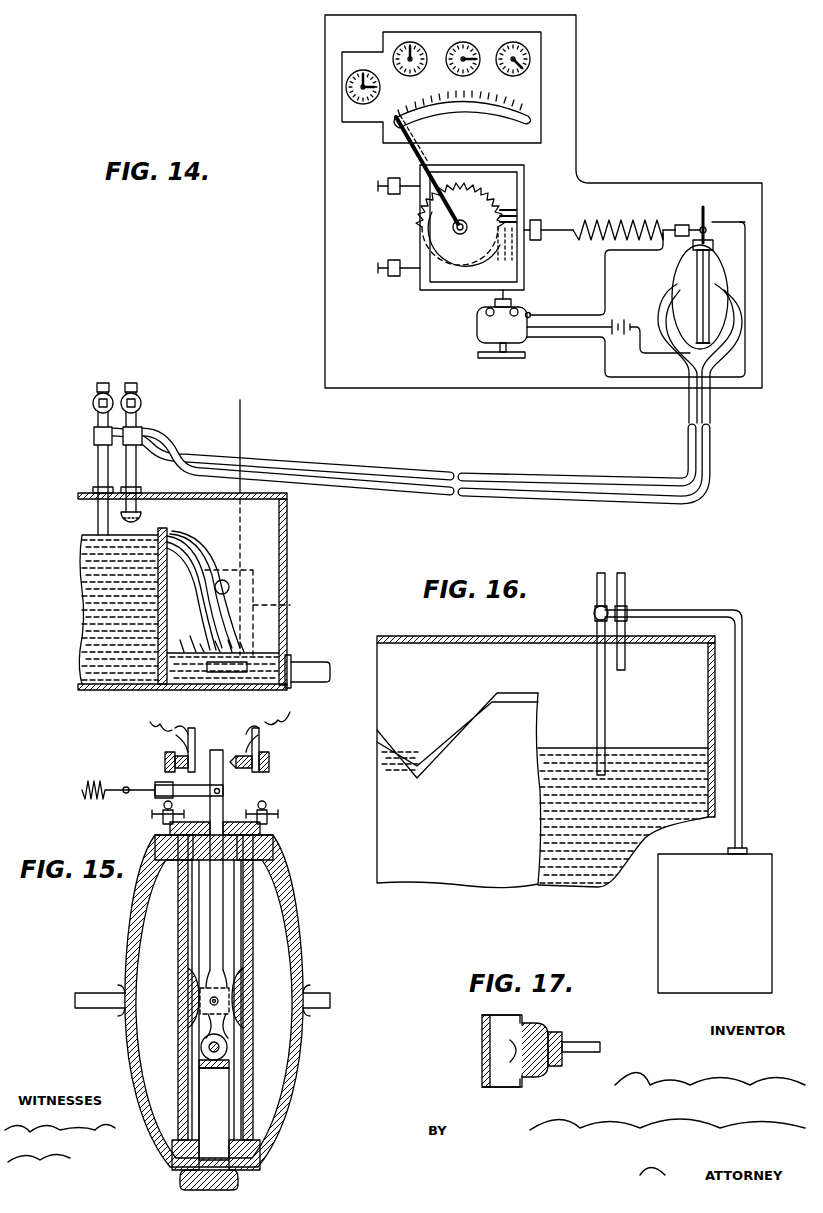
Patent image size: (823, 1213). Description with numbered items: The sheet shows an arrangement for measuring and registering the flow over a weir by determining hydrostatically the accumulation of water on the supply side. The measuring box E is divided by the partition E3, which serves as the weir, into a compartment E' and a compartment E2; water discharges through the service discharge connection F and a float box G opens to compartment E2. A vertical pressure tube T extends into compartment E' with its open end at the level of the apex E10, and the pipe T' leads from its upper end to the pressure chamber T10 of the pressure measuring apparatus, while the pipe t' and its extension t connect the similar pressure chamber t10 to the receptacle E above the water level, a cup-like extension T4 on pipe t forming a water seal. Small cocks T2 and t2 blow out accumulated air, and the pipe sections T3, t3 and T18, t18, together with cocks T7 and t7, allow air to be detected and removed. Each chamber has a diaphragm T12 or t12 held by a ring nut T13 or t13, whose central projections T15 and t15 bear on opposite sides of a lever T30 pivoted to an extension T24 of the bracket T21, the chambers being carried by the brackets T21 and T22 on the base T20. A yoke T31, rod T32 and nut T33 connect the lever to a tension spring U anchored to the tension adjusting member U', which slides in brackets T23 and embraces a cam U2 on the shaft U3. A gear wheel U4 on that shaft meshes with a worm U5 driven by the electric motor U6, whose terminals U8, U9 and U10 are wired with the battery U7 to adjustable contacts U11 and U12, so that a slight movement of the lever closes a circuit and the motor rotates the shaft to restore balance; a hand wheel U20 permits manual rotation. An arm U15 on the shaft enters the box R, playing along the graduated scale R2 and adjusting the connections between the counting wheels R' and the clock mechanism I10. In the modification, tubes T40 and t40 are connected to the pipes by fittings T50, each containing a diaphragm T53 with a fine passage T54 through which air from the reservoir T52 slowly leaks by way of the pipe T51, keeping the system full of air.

In FIG. 14, the clock mechanism I10 is at (342, 108).
In FIG. 14, the box of registering mechanism R is at (472, 73).
In FIG. 14, the counting wheels R' is at (462, 103).
In FIG. 14, the graduated scale R2 is at (480, 98).
In FIG. 14, the arm U15 is at (414, 150).
In FIG. 14, the tension adjusting member U' is at (511, 216).
In FIG. 14, the cam U2 is at (462, 262).
In FIG. 14, the shaft U3 is at (444, 237).
In FIG. 14, the gear wheel U4 is at (490, 205).
In FIG. 14, the worm U5 is at (515, 216).
In FIG. 14, the electric motor U6 is at (488, 332).
In FIG. 14, the battery U7 is at (622, 318).
In FIG. 14, the motor terminal U8 is at (600, 314).
In FIG. 14, the motor terminal U9 is at (530, 313).
In FIG. 14, the motor terminal U10 is at (535, 337).
In FIG. 14, the adjustable contact U11 is at (700, 220).
In FIG. 15, the adjustable contact U11 is at (192, 760).
In FIG. 14, the adjustable contact U12 is at (714, 220).
In FIG. 15, the adjustable contact U12 is at (250, 758).
In FIG. 14, the hand wheel U20 is at (522, 357).
In FIG. 14, the tension spring U is at (612, 218).
In FIG. 15, the tension spring U is at (81, 794).
In FIG. 14, the vertical pressure tube T is at (85, 459).
In FIG. 14, the pipe t is at (138, 447).
In FIG. 14, the cock T2 is at (93, 403).
In FIG. 14, the cock t2 is at (141, 403).
In FIG. 14, the pipe section T3 is at (94, 433).
In FIG. 14, the pipe section t3 is at (141, 433).
In FIG. 14, the cup-like extension T4 is at (143, 519).
In FIG. 14, the pipe T' is at (404, 405).
In FIG. 15, the pipe T' is at (100, 987).
In FIG. 16, the pipe T' is at (587, 664).
In FIG. 14, the pipe t' is at (442, 392).
In FIG. 15, the pipe t' is at (316, 987).
In FIG. 16, the pipe t' is at (638, 617).
In FIG. 15, the cock T7 is at (152, 814).
In FIG. 15, the cock t7 is at (278, 814).
In FIG. 14, the pressure chamber T10 is at (680, 280).
In FIG. 15, the pressure chamber T10 is at (138, 1042).
In FIG. 14, the pressure chamber t10 is at (718, 282).
In FIG. 15, the pressure chamber t10 is at (290, 1058).
In FIG. 15, the diaphragm T12 is at (178, 968).
In FIG. 15, the diaphragm t12 is at (253, 903).
In FIG. 15, the ring nut T13 is at (182, 825).
In FIG. 15, the ring nut t13 is at (250, 1135).
In FIG. 15, the central projection T15 is at (200, 1003).
In FIG. 15, the central projection t15 is at (230, 1005).
In FIG. 15, the pipe section T18 is at (155, 855).
In FIG. 15, the pipe section t18 is at (262, 830).
In FIG. 14, the base T20 is at (389, 320).
In FIG. 15, the bracket T21 is at (228, 1190).
In FIG. 15, the bracket T22 is at (232, 823).
In FIG. 14, the brackets T23 is at (392, 196).
In FIG. 15, the extension of bracket T24 is at (212, 1100).
In FIG. 14, the lever T30 is at (708, 212).
In FIG. 15, the lever T30 is at (225, 885).
In FIG. 15, the yoke T31 is at (214, 790).
In FIG. 15, the rod T32 is at (140, 790).
In FIG. 15, the nut T33 is at (165, 783).
In FIG. 16, the tube T40 is at (597, 673).
In FIG. 16, the tube t40 is at (626, 670).
In FIG. 16, the fitting T50 is at (595, 616).
In FIG. 17, the fitting T50 is at (482, 1054).
In FIG. 16, the pipe T51 is at (692, 729).
In FIG. 17, the pipe T51 is at (588, 1042).
In FIG. 16, the air reservoir T52 is at (715, 920).
In FIG. 17, the diaphragm T53 is at (545, 1070).
In FIG. 17, the fine passage T54 is at (545, 1077).
In FIG. 14, the measuring box E is at (192, 591).
In FIG. 16, the measuring box E is at (546, 726).
In FIG. 14, the compartment E' is at (101, 597).
In FIG. 16, the compartment E' is at (542, 765).
In FIG. 14, the compartment E2 is at (205, 583).
In FIG. 14, the partition E3 is at (160, 650).
In FIG. 14, the apex E10 is at (190, 552).
In FIG. 14, the float box G is at (257, 527).
In FIG. 14, the service discharge connection F is at (312, 662).